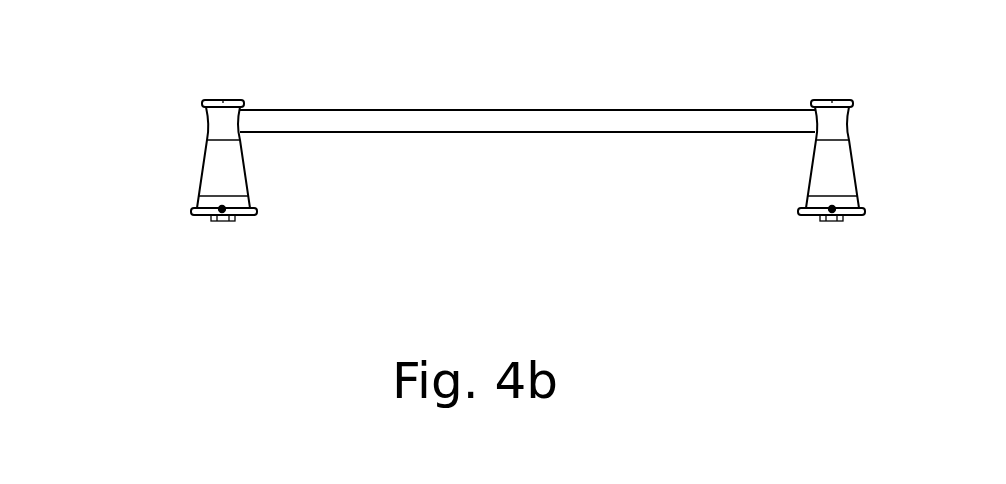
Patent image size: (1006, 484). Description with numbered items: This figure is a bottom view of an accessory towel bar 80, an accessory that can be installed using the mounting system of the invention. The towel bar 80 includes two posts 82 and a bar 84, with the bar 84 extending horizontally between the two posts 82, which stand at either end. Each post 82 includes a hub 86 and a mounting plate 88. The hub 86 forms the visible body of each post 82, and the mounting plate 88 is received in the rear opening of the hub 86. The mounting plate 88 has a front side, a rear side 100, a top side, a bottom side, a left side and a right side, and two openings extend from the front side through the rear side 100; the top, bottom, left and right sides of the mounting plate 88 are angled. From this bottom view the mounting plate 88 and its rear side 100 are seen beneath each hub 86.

The towel bar 80 is at (520, 170).
The post 82 is at (520, 164).
The bar 84 is at (522, 110).
The hub 86 is at (218, 170).
The mounting plate 88 is at (222, 222).
The rear side 100 is at (215, 220).